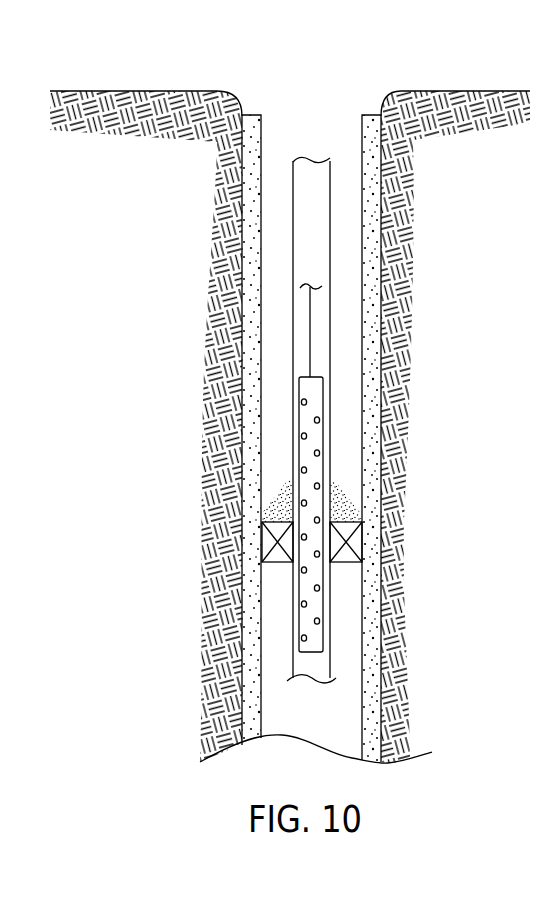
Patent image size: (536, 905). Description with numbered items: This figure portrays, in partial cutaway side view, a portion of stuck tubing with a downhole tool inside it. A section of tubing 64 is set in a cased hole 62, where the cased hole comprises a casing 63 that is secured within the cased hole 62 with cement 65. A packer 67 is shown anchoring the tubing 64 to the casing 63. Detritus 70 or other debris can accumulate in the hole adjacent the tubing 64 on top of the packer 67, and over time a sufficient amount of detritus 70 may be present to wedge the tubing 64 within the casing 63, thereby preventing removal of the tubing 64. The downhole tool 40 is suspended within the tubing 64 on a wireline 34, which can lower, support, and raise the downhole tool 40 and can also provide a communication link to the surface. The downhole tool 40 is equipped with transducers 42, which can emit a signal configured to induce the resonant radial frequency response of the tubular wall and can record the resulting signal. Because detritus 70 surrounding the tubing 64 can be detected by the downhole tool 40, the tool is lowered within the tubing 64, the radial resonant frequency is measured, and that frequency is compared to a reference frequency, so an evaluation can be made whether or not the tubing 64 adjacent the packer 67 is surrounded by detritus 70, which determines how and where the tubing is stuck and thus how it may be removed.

The cased hole 62 is at (313, 104).
The casing 63 is at (373, 173).
The tubing 64 is at (330, 213).
The cement 65 is at (362, 341).
The wireline 34 is at (310, 339).
The downhole tool 40 is at (299, 448).
The transducers 42 is at (320, 452).
The detritus 70 is at (335, 503).
The packer 67 is at (346, 545).